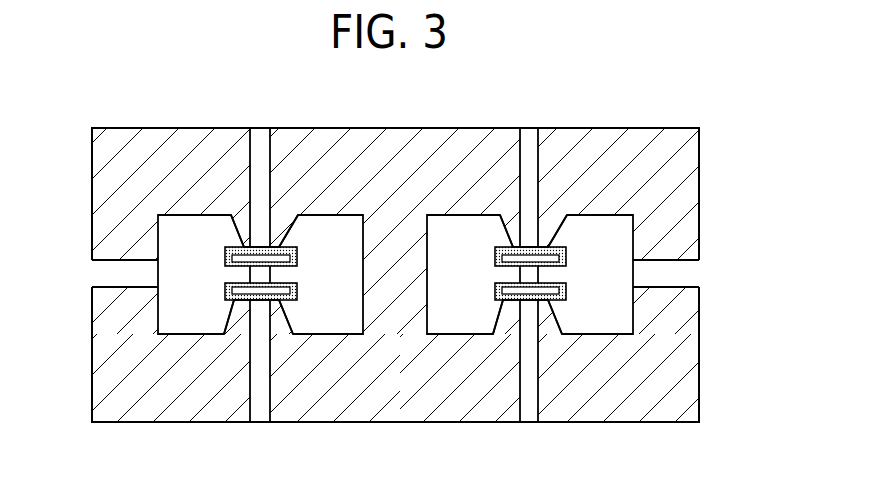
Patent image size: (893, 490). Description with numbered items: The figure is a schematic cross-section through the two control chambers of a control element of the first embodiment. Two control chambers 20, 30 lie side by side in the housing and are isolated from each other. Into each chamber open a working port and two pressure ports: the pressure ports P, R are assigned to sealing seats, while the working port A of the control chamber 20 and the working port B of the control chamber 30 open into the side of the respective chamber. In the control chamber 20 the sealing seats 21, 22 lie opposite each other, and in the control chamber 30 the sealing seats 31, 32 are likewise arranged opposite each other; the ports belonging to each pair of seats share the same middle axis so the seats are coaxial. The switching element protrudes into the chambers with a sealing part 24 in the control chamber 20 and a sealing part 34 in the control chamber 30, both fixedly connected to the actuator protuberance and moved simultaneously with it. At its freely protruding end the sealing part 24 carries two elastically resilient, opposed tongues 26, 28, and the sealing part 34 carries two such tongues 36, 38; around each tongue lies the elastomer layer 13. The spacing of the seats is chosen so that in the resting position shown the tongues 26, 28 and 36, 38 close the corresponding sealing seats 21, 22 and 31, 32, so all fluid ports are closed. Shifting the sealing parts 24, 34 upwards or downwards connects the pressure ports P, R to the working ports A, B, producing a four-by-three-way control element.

The elastomer layer 13 is at (225, 258).
The control chamber 20 is at (333, 237).
The sealing seat 21 is at (238, 234).
The sealing seat 22 is at (233, 307).
The sealing part 24 is at (225, 273).
The tongue 26 is at (277, 247).
The tongue 28 is at (271, 304).
The control chamber 30 is at (457, 237).
The sealing seat 31 is at (551, 245).
The sealing seat 32 is at (549, 309).
The sealing part 34 is at (565, 277).
The tongue 36 is at (502, 250).
The tongue 38 is at (514, 303).
The pressure port P is at (260, 140).
The pressure port R is at (532, 140).
The working port A is at (100, 274).
The working port B is at (677, 278).